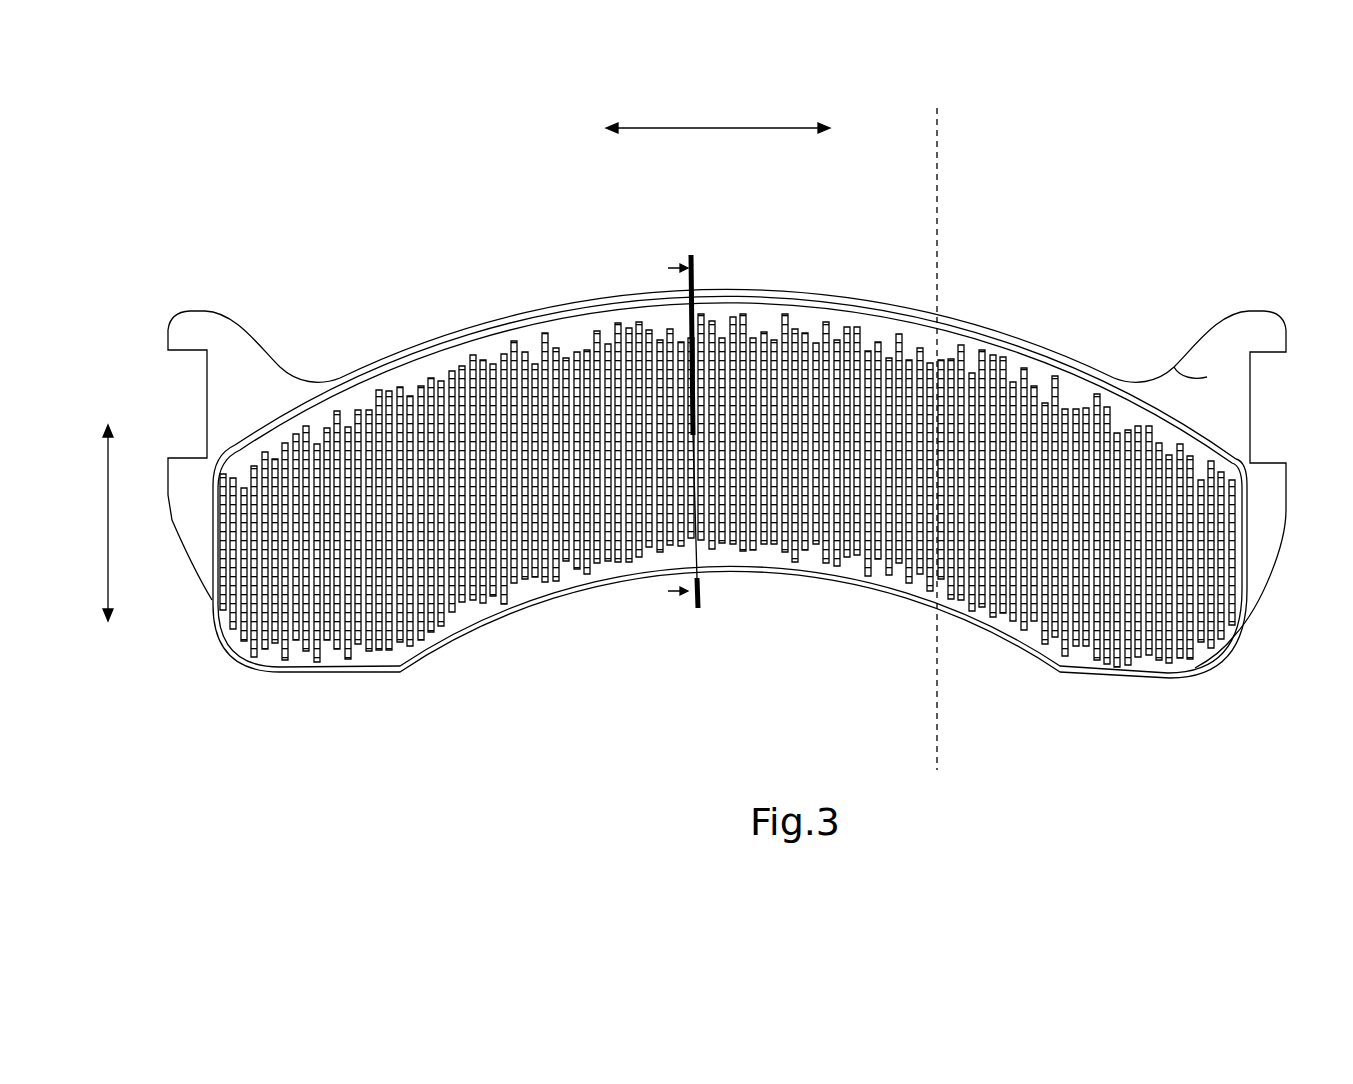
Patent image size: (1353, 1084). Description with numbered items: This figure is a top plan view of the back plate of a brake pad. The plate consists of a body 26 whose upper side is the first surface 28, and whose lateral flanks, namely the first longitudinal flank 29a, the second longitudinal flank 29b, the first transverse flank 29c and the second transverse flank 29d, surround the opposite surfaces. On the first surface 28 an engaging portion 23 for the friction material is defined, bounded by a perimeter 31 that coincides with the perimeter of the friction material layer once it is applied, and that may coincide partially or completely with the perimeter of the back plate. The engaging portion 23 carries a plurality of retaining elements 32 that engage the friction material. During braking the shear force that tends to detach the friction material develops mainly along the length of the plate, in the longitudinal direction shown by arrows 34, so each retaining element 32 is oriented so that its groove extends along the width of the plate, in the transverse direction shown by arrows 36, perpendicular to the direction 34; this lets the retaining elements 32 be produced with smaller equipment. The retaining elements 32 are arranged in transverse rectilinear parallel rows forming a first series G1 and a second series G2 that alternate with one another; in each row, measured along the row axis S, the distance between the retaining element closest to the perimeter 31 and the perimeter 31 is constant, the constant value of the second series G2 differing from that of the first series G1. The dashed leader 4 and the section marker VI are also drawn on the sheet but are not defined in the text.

The brake pad 4 is at (470, 632).
The engaging portion 23 is at (706, 461).
The body 26 is at (250, 362).
The first surface 28 is at (1207, 377).
The first longitudinal flank 29a is at (609, 290).
The second longitudinal flank 29b is at (557, 597).
The first transverse flank 29c is at (192, 563).
The second transverse flank 29d is at (1267, 565).
The perimeter 31 is at (232, 446).
The retaining element 32 is at (853, 298).
The longitudinal direction 34 is at (718, 116).
The transverse direction 36 is at (93, 523).
The first series G1 is at (1110, 663).
The second series G2 is at (1098, 390).
The axis S is at (948, 439).
The section line VI is at (669, 432).